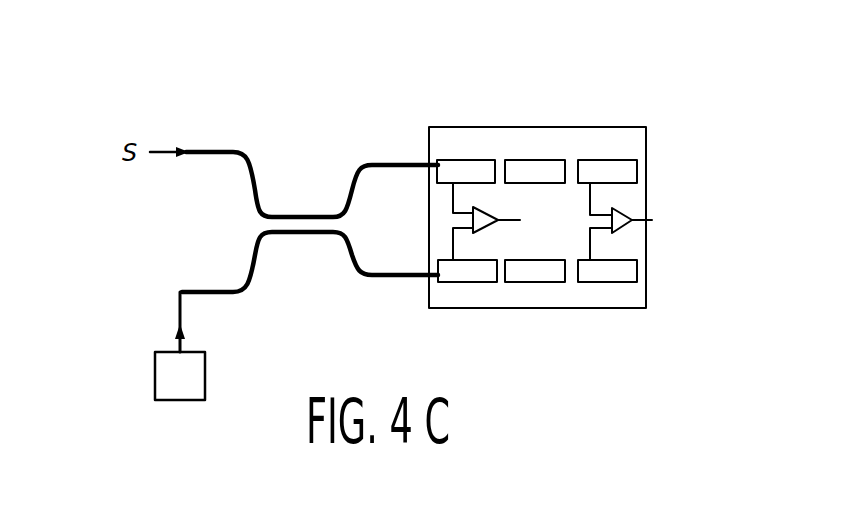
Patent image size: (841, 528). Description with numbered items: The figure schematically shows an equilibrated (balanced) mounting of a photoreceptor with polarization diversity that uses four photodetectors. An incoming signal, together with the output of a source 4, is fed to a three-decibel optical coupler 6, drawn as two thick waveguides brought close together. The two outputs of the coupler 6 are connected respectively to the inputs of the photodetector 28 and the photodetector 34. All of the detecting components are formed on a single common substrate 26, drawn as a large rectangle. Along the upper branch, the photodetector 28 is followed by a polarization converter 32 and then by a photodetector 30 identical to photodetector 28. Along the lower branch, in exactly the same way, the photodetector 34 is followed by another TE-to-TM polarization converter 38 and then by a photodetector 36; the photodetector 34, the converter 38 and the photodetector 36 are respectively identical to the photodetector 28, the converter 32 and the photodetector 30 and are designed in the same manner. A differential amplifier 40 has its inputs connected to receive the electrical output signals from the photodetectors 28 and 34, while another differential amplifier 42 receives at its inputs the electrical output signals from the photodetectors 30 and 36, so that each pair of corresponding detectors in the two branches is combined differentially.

The source 4 is at (156, 381).
The 3 dB optical coupler 6 is at (300, 200).
The substrate 26 is at (428, 293).
The photodetector 28 is at (453, 160).
The photodetector 30 is at (615, 160).
The polarization converter 32 is at (534, 160).
The photodetector 34 is at (458, 283).
The photodetector 36 is at (625, 283).
The TE-to-TM polarization converter 38 is at (538, 283).
The differential amplifier 40 is at (480, 207).
The differential amplifier 42 is at (618, 212).